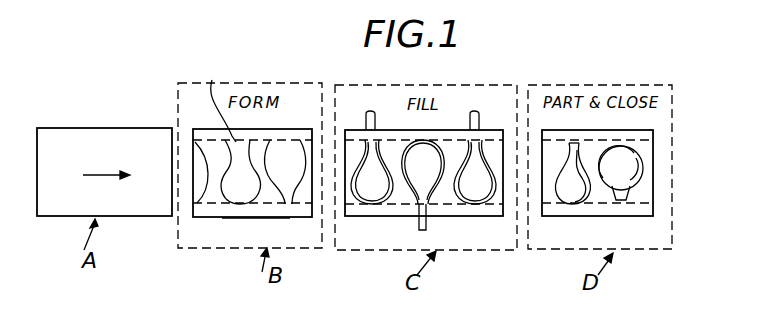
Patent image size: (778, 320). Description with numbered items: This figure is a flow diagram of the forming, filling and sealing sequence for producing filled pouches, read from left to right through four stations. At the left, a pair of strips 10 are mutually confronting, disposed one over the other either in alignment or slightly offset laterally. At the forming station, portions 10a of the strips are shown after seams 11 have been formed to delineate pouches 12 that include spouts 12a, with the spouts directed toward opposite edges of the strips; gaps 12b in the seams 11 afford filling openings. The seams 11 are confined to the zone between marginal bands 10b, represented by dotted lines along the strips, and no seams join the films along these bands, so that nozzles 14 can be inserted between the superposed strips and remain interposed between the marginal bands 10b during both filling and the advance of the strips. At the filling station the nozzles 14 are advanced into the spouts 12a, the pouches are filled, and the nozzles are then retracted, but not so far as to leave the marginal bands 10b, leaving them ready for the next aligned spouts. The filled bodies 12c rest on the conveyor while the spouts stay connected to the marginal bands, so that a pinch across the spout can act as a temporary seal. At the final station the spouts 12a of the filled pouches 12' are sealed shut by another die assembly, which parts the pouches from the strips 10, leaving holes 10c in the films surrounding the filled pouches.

The strips 10 is at (117, 137).
The portions of the strips 10a is at (246, 218).
The marginal bands 10b is at (195, 131).
The holes 10c is at (646, 159).
The seams 11 is at (303, 121).
The pouches 12 is at (197, 172).
The spouts 12a is at (286, 215).
The gaps 12b is at (215, 101).
The bodies 12c is at (422, 153).
The filled pouches 12' is at (635, 173).
The nozzles 14 is at (478, 126).